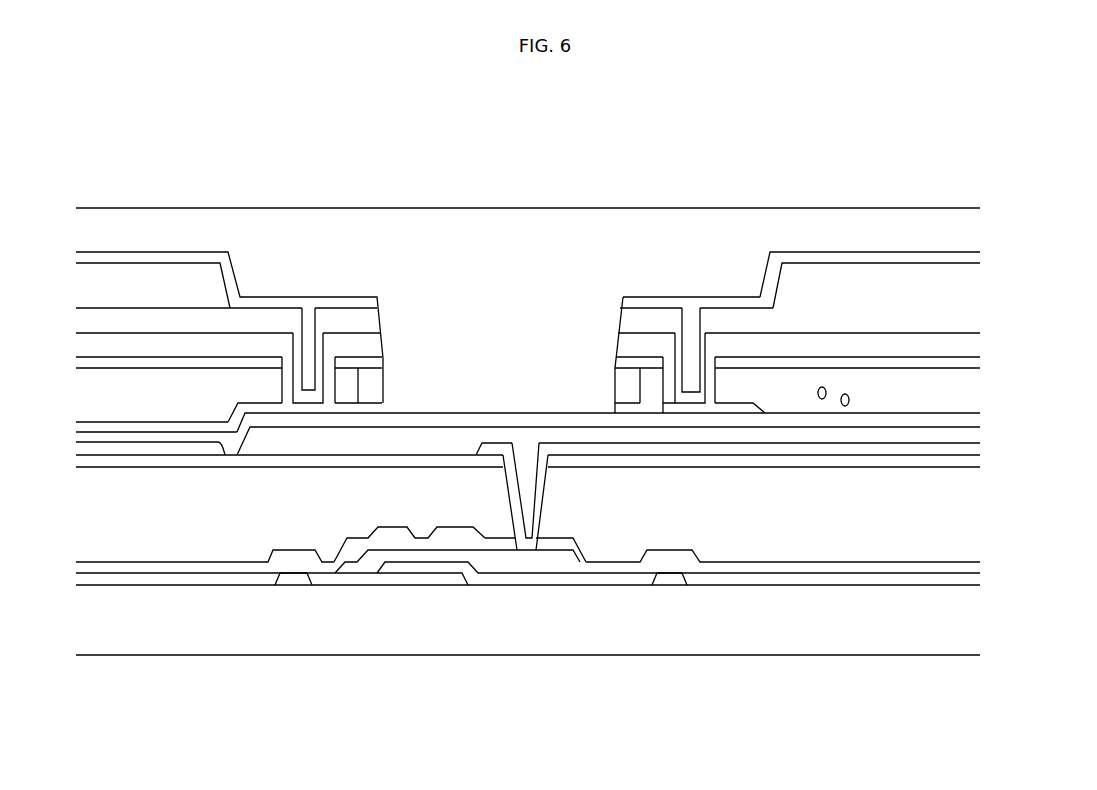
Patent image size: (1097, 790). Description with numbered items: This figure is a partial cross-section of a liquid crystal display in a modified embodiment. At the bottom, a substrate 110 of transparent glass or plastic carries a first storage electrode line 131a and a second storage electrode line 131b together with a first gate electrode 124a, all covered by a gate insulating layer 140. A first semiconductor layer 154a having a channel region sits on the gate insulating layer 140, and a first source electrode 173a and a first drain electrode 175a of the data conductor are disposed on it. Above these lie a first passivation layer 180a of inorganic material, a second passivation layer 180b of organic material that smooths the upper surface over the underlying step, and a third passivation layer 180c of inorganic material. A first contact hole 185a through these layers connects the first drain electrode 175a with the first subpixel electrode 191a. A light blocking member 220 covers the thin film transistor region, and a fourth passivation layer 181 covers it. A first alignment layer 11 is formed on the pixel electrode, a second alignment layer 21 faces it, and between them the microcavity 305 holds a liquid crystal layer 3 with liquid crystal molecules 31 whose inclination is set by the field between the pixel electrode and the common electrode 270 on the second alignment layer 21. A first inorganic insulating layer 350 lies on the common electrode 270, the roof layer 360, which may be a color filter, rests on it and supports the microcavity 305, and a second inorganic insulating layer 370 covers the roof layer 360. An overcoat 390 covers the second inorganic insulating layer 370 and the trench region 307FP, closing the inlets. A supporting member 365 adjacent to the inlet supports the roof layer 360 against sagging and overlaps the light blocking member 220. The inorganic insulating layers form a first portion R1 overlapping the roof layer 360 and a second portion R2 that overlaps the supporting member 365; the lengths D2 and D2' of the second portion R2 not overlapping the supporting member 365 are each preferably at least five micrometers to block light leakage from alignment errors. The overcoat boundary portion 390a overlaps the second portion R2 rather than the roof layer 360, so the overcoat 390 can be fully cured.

The microcavity 305 is at (192, 395).
The supporting member 365 is at (310, 322).
The overcoat 390 is at (822, 215).
The second inorganic insulating layer 370 is at (884, 262).
The roof layer 360 is at (976, 287).
The first inorganic insulating layer 350 is at (976, 326).
The common electrode 270 is at (976, 350).
The second alignment layer 21 is at (976, 372).
The liquid crystal layer 3 is at (976, 400).
The first alignment layer 11 is at (976, 425).
The liquid crystal molecules 31 is at (852, 401).
The trench region 307FP is at (497, 358).
The overcoat boundary portion 390a is at (623, 387).
The light blocking member 220 is at (430, 440).
The first contact hole 185a is at (527, 470).
The fourth passivation layer 181 is at (580, 420).
The first subpixel electrode 191a is at (115, 450).
The third passivation layer 180c is at (172, 465).
The second passivation layer 180b is at (228, 525).
The second storage electrode line 131b is at (295, 582).
The first source electrode 173a is at (358, 560).
The first gate electrode 124a is at (410, 580).
The first semiconductor layer 154a is at (445, 558).
The first drain electrode 175a is at (525, 553).
The first passivation layer 180a is at (612, 566).
The first storage electrode line 131a is at (672, 582).
The gate insulating layer 140 is at (745, 580).
The substrate 110 is at (822, 638).
The first portion R1 is at (76, 143).
The second portion R2 is at (232, 143).
The length D2 is at (642, 270).
The length D2' is at (736, 270).